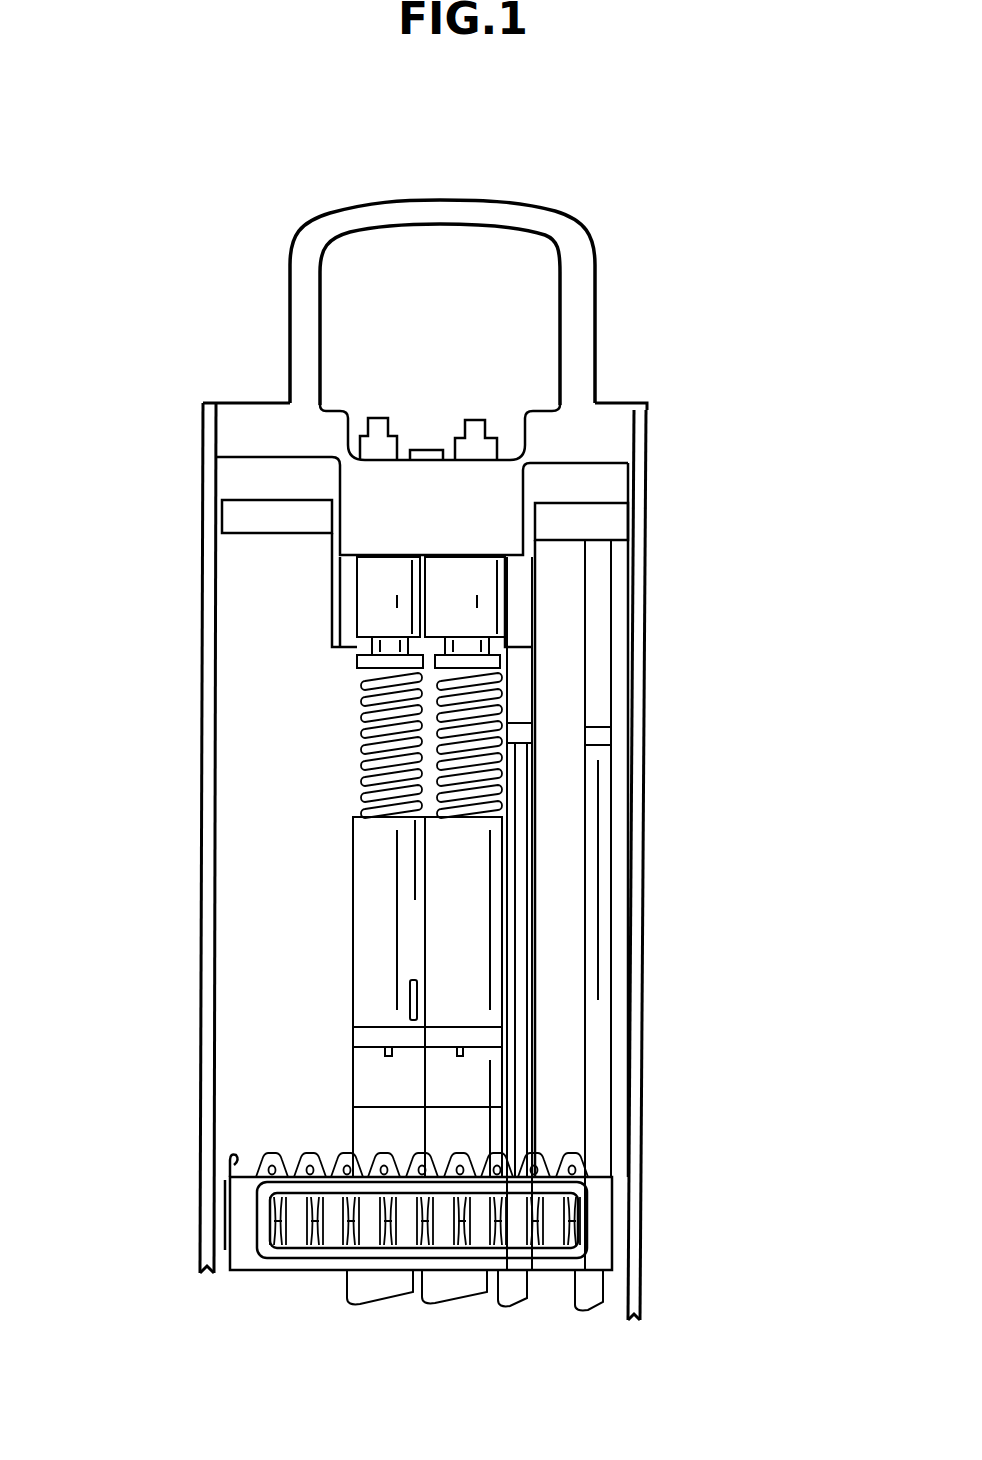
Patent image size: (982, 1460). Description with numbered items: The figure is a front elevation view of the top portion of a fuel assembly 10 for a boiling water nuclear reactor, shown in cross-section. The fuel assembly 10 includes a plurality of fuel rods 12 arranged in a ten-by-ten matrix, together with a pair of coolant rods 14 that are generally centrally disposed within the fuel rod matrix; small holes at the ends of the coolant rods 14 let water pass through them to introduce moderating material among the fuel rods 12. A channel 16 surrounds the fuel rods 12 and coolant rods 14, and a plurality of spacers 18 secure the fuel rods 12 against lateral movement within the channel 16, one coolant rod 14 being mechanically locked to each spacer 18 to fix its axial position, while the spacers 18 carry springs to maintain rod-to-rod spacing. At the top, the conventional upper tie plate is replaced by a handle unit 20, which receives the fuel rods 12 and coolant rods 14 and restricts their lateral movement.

The fuel assembly 10 is at (776, 162).
The fuel rods 12 is at (596, 764).
The coolant rods 14 is at (365, 848).
The channel 16 is at (640, 645).
The spacers 18 is at (235, 1205).
The handle unit 20 is at (190, 308).